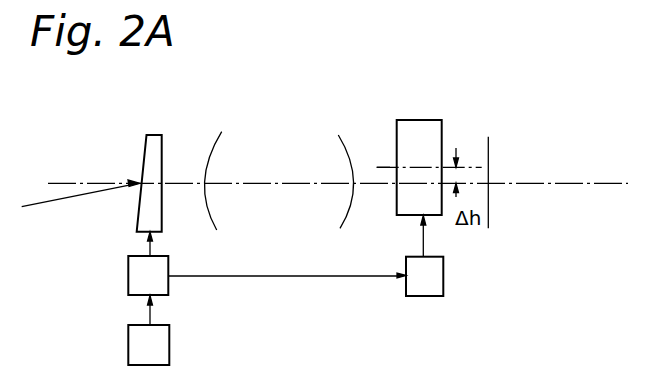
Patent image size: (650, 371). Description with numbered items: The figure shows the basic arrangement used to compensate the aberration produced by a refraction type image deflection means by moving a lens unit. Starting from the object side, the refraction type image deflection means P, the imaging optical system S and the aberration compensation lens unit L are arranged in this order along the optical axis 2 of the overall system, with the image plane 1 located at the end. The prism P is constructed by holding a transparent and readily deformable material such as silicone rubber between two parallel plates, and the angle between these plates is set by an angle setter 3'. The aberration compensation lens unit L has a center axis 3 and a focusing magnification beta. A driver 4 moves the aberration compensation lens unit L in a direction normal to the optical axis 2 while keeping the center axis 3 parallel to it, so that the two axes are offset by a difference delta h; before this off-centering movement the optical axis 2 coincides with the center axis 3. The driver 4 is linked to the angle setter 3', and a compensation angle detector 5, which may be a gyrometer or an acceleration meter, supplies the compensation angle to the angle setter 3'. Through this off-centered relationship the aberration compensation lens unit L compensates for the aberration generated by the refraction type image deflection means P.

The image plane 1 is at (490, 138).
The optical axis 2 is at (565, 181).
The center axis 3 is at (417, 127).
The angle setter 3' is at (148, 275).
The driver 4 is at (424, 276).
The compensation angle detector 5 is at (148, 345).
The refraction type image deflection means P is at (161, 134).
The imaging optical system S is at (278, 140).
The aberration compensation lens unit L is at (430, 120).